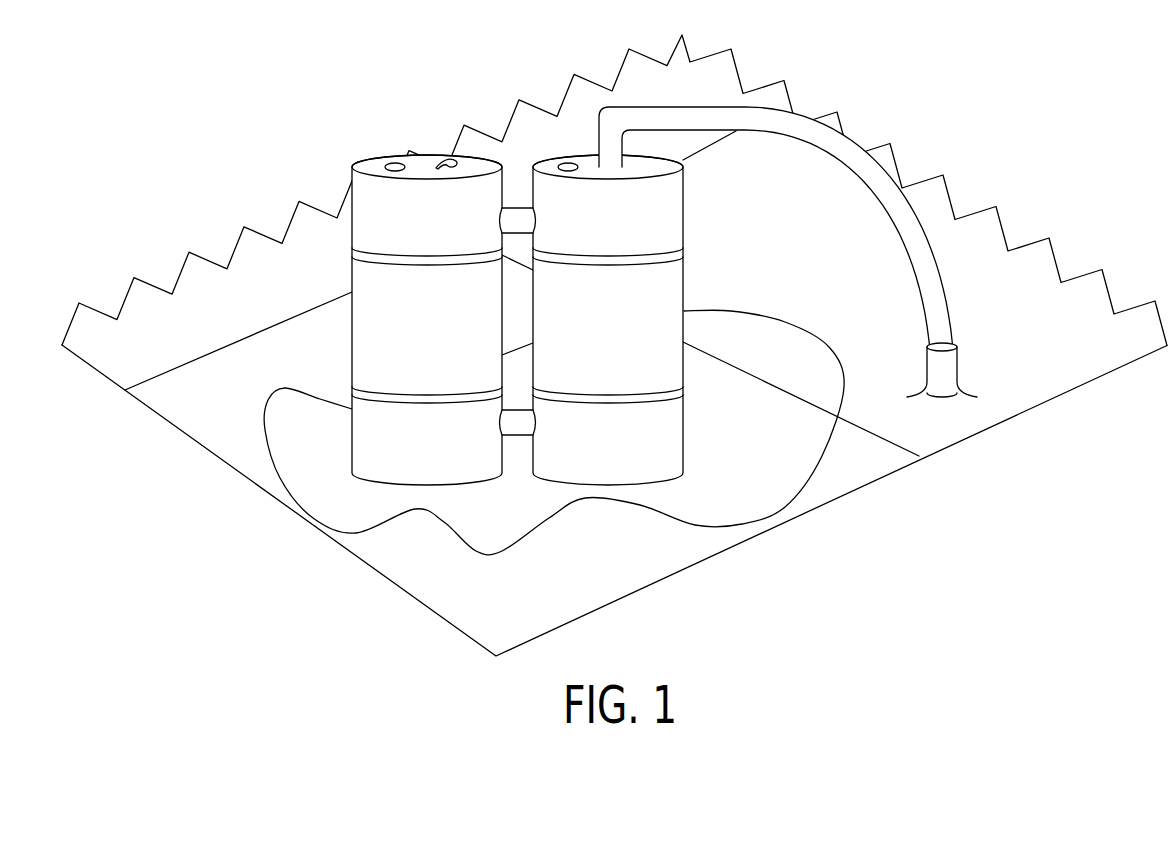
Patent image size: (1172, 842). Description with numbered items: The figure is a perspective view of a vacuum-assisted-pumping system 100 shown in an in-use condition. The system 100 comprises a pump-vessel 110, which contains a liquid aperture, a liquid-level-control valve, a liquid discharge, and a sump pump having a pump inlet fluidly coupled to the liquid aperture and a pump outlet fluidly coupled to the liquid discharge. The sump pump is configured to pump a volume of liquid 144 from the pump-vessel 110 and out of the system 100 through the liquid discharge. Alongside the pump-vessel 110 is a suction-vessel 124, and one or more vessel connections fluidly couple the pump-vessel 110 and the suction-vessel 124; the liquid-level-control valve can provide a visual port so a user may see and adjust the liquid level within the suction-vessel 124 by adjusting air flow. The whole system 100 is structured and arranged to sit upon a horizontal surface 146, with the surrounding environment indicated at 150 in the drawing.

The vacuum-assisted-pumping system 100 is at (694, 261).
The pump-vessel 110 is at (573, 157).
The suction-vessel 124 is at (383, 157).
The volume of liquid 144 is at (753, 500).
The horizontal-surface 146 is at (620, 587).
The environment with stairs 150 is at (1080, 104).